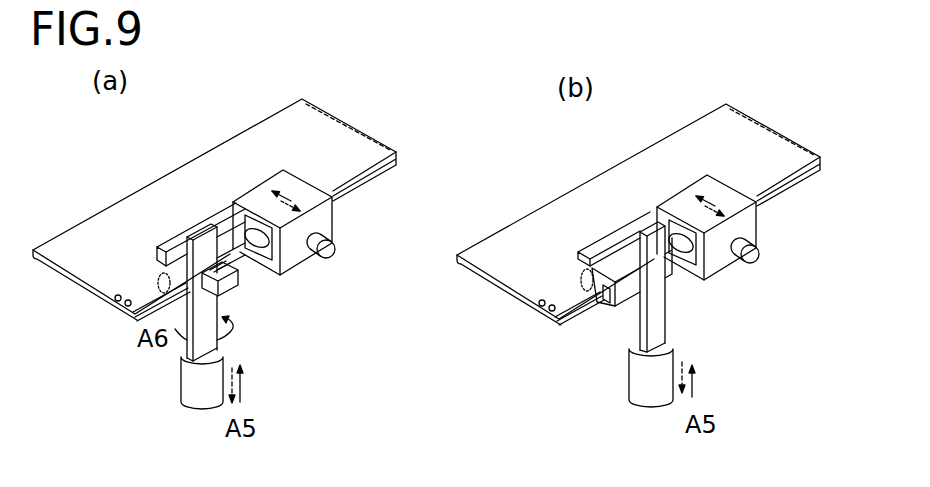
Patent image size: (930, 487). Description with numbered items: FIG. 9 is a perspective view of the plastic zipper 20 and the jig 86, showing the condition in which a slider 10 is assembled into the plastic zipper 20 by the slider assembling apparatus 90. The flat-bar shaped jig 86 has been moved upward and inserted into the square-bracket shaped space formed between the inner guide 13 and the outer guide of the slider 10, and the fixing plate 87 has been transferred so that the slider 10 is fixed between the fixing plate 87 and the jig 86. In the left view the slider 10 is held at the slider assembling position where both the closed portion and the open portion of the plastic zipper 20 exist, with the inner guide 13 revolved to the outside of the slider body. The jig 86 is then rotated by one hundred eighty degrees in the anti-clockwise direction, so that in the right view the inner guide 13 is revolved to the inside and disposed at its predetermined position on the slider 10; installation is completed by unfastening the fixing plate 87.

The slider 10 is at (168, 296).
The inner guide 13 is at (226, 293).
The plastic zipper 20 is at (320, 134).
The jig 86 is at (207, 330).
The fixing plate 87 is at (185, 238).
The slider assembling apparatus 90 is at (240, 367).